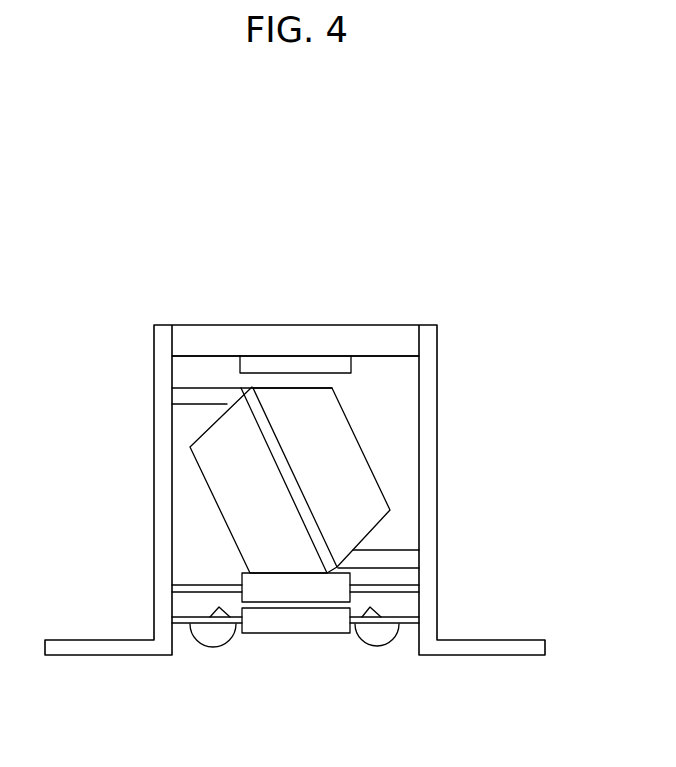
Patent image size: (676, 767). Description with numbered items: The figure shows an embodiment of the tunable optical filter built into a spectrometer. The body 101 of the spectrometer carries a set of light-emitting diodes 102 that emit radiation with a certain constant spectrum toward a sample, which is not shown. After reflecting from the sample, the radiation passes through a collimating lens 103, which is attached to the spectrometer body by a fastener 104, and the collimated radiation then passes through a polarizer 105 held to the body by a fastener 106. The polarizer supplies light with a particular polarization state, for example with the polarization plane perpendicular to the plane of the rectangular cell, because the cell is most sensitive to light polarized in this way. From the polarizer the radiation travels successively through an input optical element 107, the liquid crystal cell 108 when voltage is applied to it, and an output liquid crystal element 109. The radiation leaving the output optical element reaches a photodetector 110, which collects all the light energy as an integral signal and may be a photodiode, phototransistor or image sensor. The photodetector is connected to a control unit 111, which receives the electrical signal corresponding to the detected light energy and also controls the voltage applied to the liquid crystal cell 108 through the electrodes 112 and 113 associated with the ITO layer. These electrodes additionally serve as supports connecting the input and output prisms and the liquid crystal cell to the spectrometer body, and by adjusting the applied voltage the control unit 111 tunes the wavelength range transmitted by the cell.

The body 101 is at (480, 657).
The light-emitting diodes 102 is at (365, 645).
The collimating lens 103 is at (240, 612).
The fastener 104 is at (410, 616).
The polarizer 105 is at (240, 578).
The fastener 106 is at (410, 583).
The input optical element 107 is at (227, 494).
The liquid crystal cell 108 is at (270, 441).
The output liquid crystal element 109 is at (330, 441).
The photodetector 110 is at (351, 364).
The control unit 111 is at (403, 343).
The electrode 112 is at (208, 388).
The electrode 113 is at (410, 558).